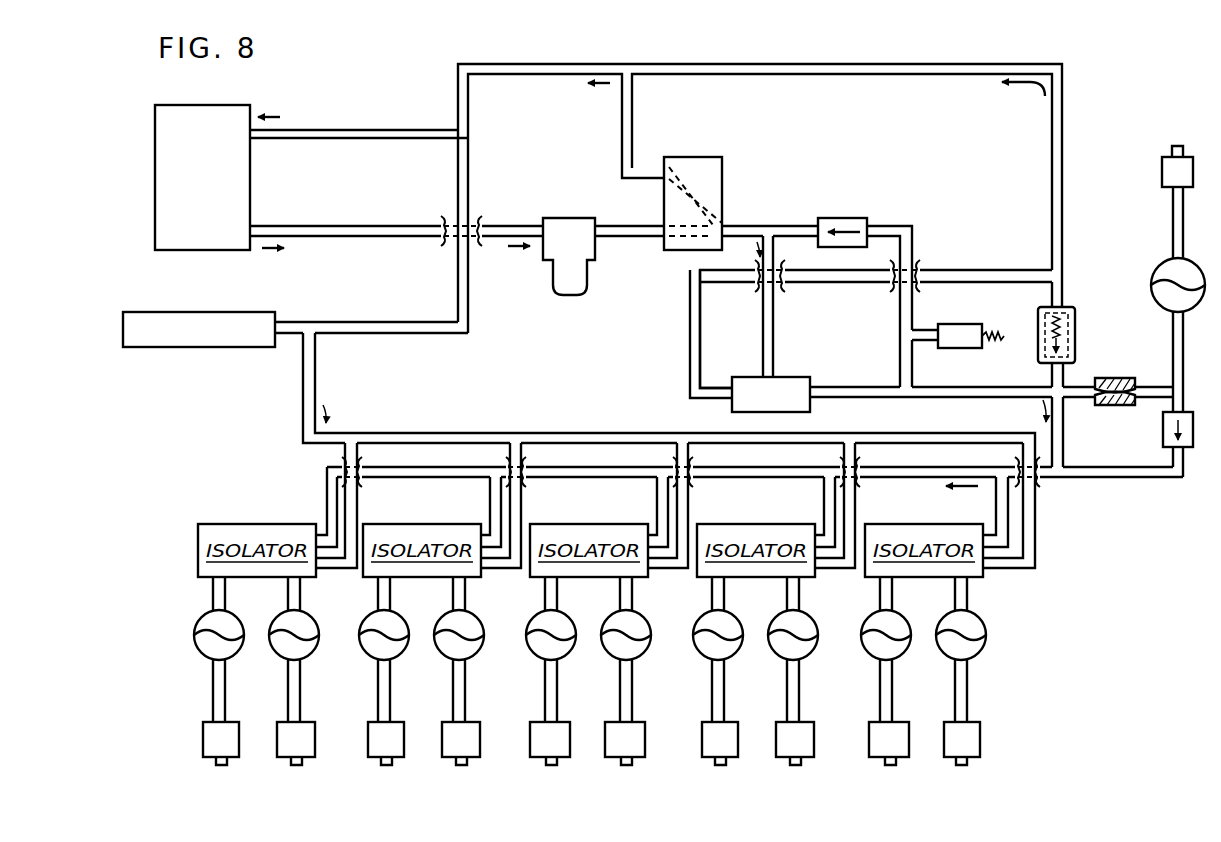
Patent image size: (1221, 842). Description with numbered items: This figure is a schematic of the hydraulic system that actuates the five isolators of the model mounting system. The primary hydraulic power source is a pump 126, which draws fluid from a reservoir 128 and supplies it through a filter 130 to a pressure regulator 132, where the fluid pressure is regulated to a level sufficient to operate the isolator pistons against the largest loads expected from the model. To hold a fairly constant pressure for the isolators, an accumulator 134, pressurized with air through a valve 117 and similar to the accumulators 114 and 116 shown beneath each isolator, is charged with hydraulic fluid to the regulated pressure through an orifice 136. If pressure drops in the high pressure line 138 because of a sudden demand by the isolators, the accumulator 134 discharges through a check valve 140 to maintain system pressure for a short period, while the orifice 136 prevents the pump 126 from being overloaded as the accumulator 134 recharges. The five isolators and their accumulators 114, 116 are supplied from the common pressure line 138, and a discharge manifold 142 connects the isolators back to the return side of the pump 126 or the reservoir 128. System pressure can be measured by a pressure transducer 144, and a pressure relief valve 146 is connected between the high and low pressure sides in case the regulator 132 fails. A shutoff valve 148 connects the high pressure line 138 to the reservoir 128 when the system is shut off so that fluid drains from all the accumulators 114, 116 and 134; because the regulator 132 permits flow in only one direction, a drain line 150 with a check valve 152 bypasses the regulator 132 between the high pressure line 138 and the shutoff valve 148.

The accumulator 114 is at (236, 618).
The accumulator 116 is at (284, 660).
The valve 117 is at (560, 740).
The pump 126 is at (202, 190).
The reservoir 128 is at (203, 344).
The filter 130 is at (580, 254).
The pressure regulator 132 is at (778, 409).
The accumulator 134 is at (1160, 262).
The orifice 136 is at (1106, 378).
The high pressure line 138 is at (1087, 483).
The check valve 140 is at (1163, 432).
The discharge manifold 142 is at (405, 433).
The pressure transducer 144 is at (958, 324).
The pressure relief valve 146 is at (1075, 322).
The shutoff valve 148 is at (705, 157).
The drain line 150 is at (905, 226).
The check valve 152 is at (830, 218).